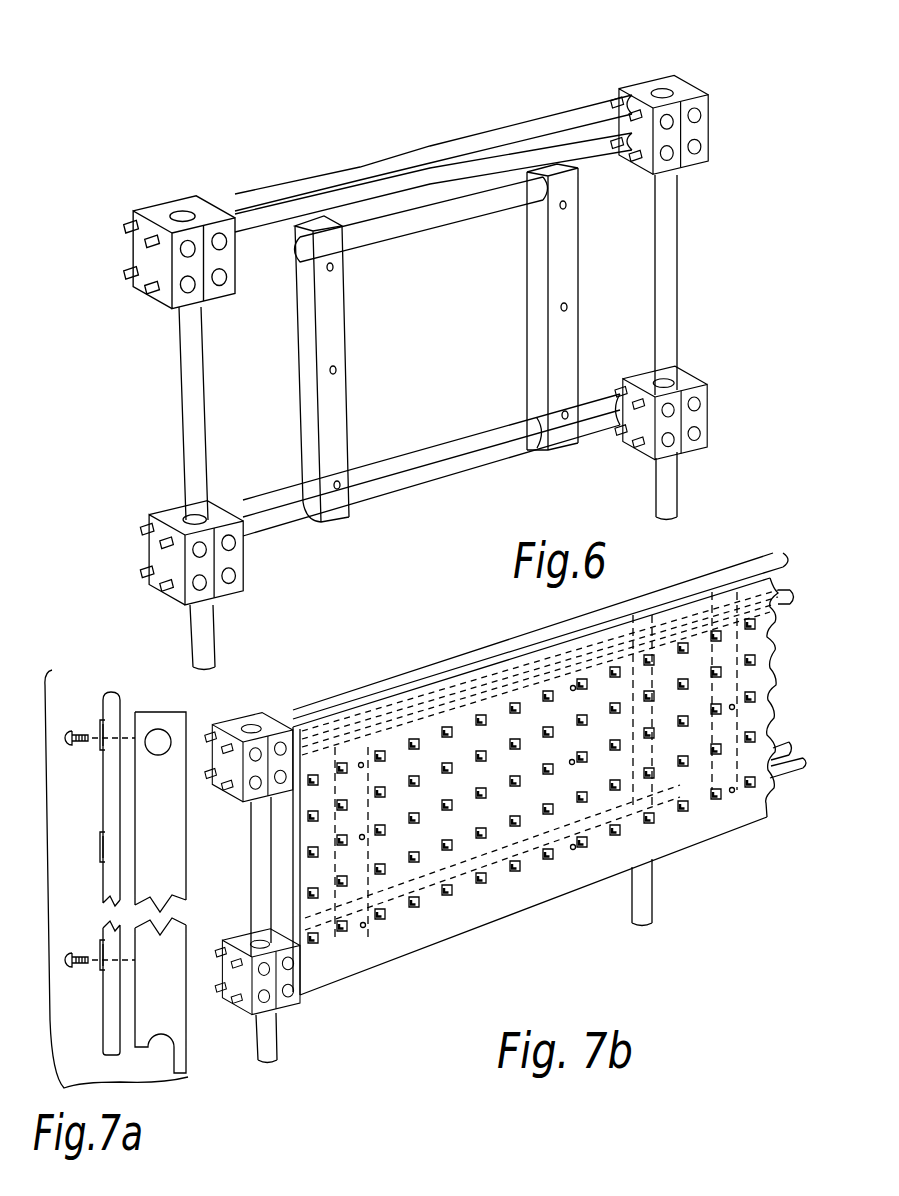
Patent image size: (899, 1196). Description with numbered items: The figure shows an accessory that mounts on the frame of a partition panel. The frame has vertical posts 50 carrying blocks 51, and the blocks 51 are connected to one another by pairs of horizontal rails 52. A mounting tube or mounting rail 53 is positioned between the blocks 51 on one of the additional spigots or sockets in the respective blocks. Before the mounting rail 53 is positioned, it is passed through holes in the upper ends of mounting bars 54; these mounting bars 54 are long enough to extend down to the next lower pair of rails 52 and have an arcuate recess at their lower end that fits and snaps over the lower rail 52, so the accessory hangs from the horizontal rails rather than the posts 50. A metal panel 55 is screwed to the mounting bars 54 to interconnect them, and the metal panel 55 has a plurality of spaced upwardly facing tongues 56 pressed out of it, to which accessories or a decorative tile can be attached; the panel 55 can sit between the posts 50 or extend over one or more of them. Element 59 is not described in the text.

In FIG. 6, the post 50 is at (668, 270).
In FIG. 7B, the post 50 is at (645, 898).
In FIG. 6, the block 51 is at (178, 215).
In FIG. 6, the rail 52 is at (520, 152).
In FIG. 6, the mounting rail 53 is at (430, 215).
In FIG. 6, the mounting bar 54 is at (308, 370).
In FIG. 7B, the mounting bar 54 is at (733, 600).
In FIG. 7B, the metal panel 55 is at (470, 778).
In FIG. 7B, the tongue 56 is at (517, 700).
In FIG. 7A, the tongue 56 is at (100, 733).
In FIG. 7A, the panel strip 59 is at (110, 885).